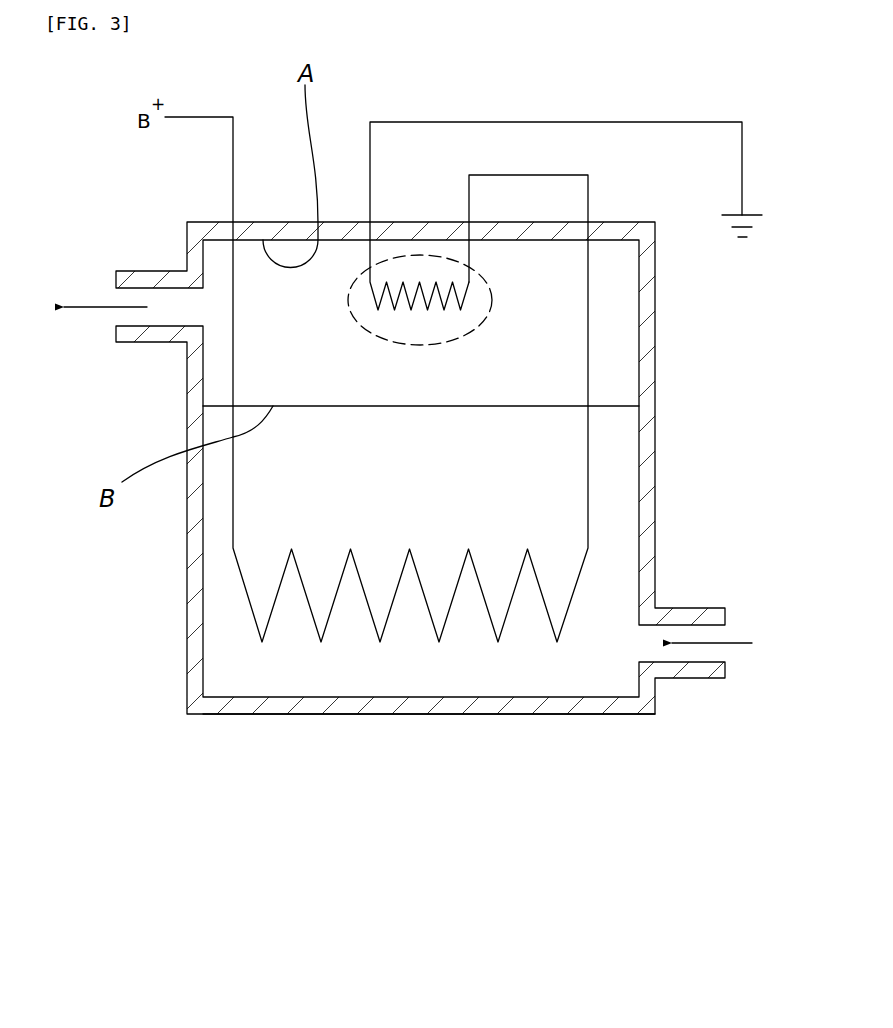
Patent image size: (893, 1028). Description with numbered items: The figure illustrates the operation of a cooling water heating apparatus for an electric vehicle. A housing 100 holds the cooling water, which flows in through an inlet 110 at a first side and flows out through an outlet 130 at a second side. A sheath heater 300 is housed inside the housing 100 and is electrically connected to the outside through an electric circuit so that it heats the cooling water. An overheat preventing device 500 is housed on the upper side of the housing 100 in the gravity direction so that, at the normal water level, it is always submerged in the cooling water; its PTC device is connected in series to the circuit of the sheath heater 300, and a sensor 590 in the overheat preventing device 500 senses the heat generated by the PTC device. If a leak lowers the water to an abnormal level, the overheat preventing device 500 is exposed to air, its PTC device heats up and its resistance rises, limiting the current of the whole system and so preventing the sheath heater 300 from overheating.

The housing 100 is at (655, 440).
The inlet 110 is at (683, 673).
The outlet 130 is at (132, 332).
The sheath heater 300 is at (321, 642).
The overheat preventing device 500 is at (502, 300).
The sensor 590 is at (421, 714).